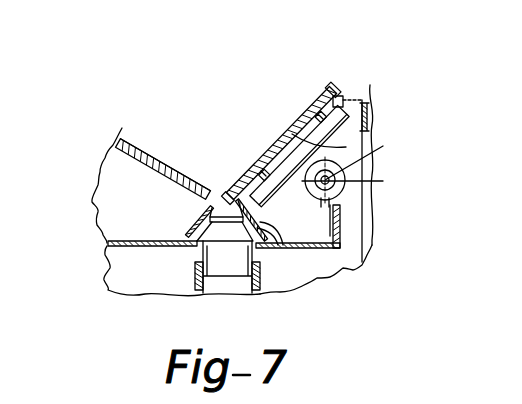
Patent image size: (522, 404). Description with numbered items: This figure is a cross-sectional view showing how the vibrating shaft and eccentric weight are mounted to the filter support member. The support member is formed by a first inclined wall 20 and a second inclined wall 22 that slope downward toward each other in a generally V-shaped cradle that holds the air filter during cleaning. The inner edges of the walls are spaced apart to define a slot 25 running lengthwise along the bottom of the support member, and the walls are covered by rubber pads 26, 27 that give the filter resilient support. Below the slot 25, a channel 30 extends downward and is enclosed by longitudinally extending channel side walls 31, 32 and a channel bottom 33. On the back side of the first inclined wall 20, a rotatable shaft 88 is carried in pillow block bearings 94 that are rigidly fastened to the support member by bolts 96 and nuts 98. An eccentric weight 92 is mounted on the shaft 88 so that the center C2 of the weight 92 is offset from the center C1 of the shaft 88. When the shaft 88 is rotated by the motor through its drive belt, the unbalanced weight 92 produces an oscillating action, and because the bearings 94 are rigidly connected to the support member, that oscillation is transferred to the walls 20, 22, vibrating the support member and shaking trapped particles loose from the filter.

The first inclined wall 20 is at (334, 92).
The second inclined wall 22 is at (152, 167).
The slot 25 is at (225, 212).
The rubber pad 26 is at (294, 134).
The rubber pad 27 is at (150, 160).
The channel 30 is at (238, 233).
The channel side wall 31 is at (182, 229).
The channel side wall 32 is at (265, 223).
The channel bottom 33 is at (197, 243).
The rotatable shaft 88 is at (322, 180).
The eccentric weight 92 is at (320, 204).
The pillow block bearings 94 is at (346, 146).
The bolts 96 is at (328, 88).
The nuts 98 is at (300, 137).
The center of the shaft C1 is at (368, 157).
The center of the weight C2 is at (357, 183).